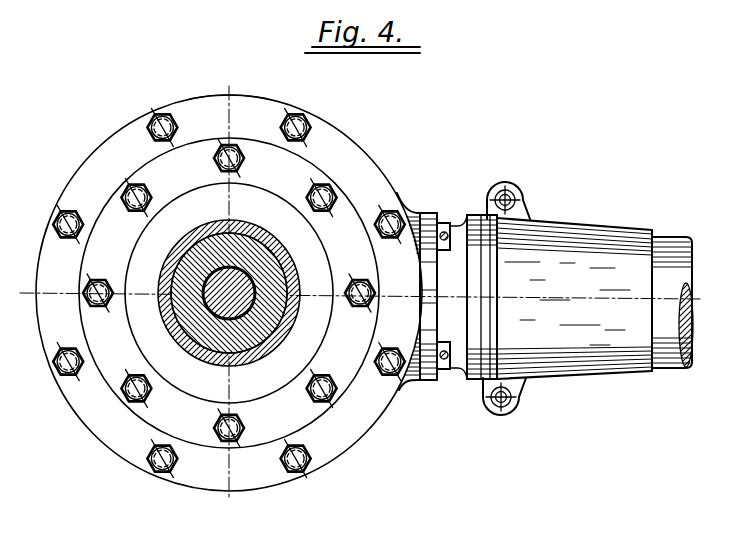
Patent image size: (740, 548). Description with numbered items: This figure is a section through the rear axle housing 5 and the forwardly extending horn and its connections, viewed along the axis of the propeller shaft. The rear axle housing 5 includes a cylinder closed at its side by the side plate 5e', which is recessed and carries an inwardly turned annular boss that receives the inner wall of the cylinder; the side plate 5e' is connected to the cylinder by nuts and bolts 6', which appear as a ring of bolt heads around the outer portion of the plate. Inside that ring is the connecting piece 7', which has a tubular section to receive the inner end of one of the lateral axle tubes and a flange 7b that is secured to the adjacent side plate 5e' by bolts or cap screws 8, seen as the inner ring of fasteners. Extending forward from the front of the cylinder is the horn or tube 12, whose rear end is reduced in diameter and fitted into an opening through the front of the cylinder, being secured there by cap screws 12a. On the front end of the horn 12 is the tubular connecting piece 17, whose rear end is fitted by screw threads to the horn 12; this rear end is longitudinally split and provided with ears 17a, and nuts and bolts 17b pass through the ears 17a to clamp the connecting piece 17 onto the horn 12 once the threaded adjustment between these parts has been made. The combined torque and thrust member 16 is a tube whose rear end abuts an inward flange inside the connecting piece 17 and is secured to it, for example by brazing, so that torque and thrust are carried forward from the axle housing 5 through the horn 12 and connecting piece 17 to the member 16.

The housing for the rear axle structure 5 is at (118, 138).
The side plate 5e' is at (228, 76).
The bolts 6' is at (209, 300).
The connecting piece 7' is at (180, 310).
The flange 7b is at (148, 415).
The bolts or cap screws 8 is at (220, 443).
The horn or forwardly extending tube 12 is at (432, 291).
The cap screws 12a is at (445, 226).
The combined torque and thrust member 16 is at (680, 246).
The tubular connecting piece 17 is at (593, 242).
The ears 17a is at (517, 197).
The nuts and bolts 17b is at (508, 191).